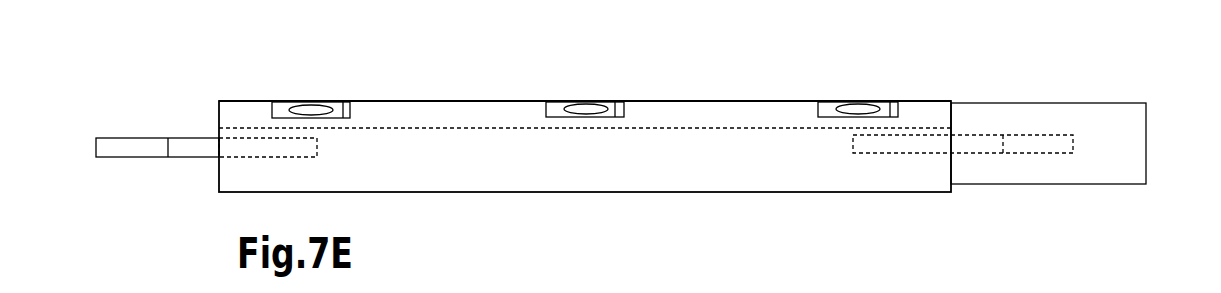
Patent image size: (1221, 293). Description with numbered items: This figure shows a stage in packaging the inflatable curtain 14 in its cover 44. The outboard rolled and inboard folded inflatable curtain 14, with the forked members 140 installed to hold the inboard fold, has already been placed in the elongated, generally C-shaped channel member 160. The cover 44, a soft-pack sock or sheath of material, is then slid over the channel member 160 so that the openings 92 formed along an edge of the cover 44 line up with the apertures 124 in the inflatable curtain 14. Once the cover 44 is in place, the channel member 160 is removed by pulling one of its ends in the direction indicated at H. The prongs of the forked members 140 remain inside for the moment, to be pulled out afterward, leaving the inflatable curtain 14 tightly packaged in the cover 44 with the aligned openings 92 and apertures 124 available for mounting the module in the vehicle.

The inflatable curtain 14 is at (743, 165).
The cover 44 is at (688, 118).
The openings 92 is at (345, 102).
The apertures 124 is at (306, 108).
The forked member 140 is at (187, 146).
The channel member 160 is at (1008, 184).
The direction of channel member removal H is at (1172, 143).